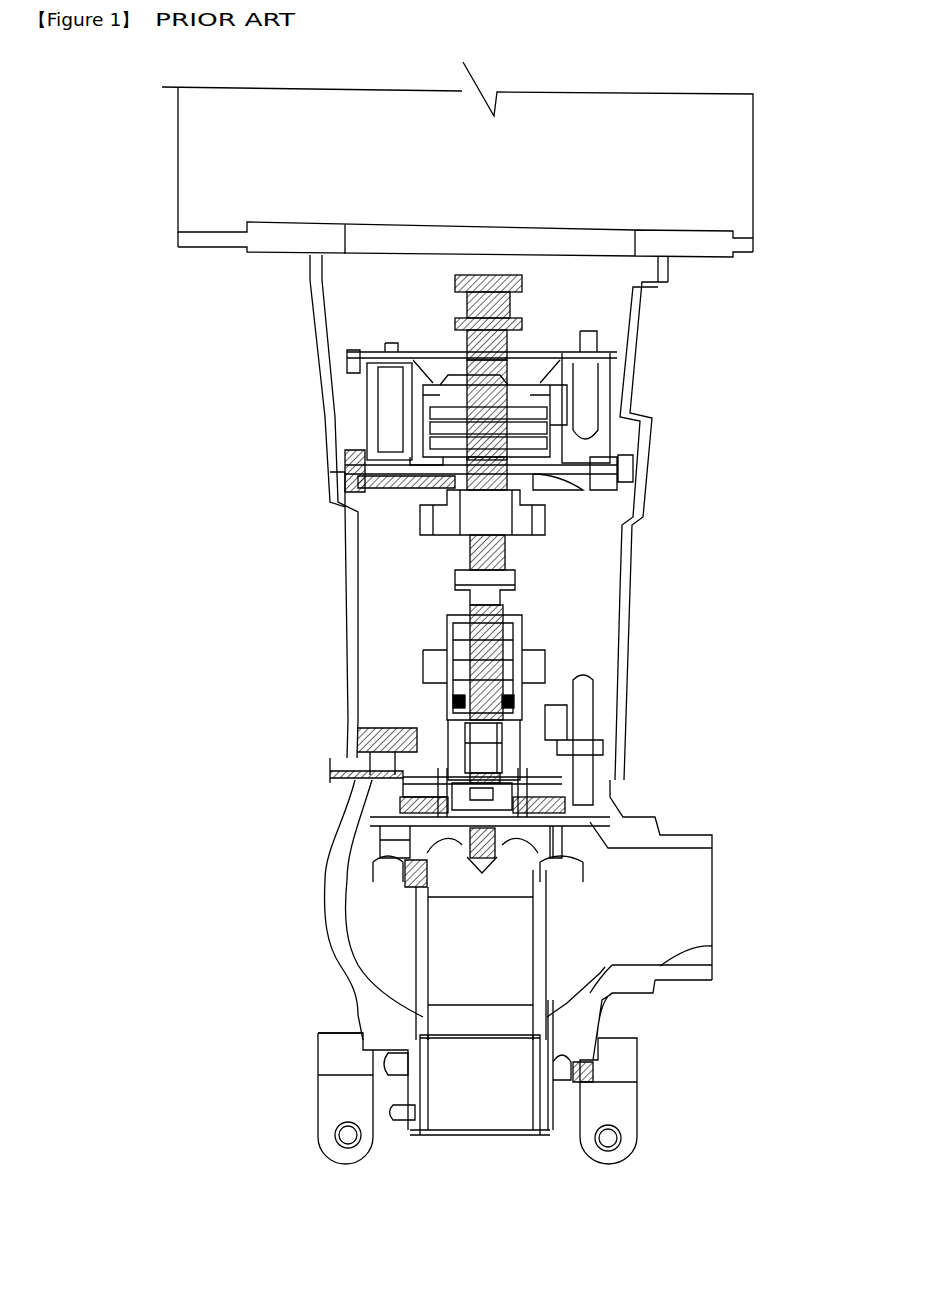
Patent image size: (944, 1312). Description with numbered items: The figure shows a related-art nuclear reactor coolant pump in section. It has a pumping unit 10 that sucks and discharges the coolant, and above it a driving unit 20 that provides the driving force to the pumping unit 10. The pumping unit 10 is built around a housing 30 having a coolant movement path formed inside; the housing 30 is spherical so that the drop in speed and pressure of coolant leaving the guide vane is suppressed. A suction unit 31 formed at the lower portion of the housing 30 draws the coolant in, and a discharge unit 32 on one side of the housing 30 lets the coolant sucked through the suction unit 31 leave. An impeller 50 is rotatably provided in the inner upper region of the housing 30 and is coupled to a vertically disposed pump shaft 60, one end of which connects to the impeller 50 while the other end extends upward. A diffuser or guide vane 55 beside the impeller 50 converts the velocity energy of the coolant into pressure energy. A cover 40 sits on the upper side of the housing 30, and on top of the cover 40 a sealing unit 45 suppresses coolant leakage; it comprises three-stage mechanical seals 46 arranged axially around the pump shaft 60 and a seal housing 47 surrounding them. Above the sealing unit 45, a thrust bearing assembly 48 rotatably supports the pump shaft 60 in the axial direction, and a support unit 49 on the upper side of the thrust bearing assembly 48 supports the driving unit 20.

The pumping unit 10 is at (548, 736).
The driving unit 20 is at (766, 181).
The support unit 49 is at (757, 247).
The housing 30 is at (680, 820).
The suction unit 31 is at (538, 1105).
The discharge unit 32 is at (712, 943).
The cover 40 is at (462, 752).
The sealing unit 45 is at (580, 705).
The 3 stage mechanical seals 46 is at (520, 636).
The seal housing 47 is at (557, 735).
The thrust bearing assembly 48 is at (560, 503).
The impeller 50 is at (413, 843).
The guide vane 55 is at (397, 877).
The pump shaft 60 is at (477, 757).